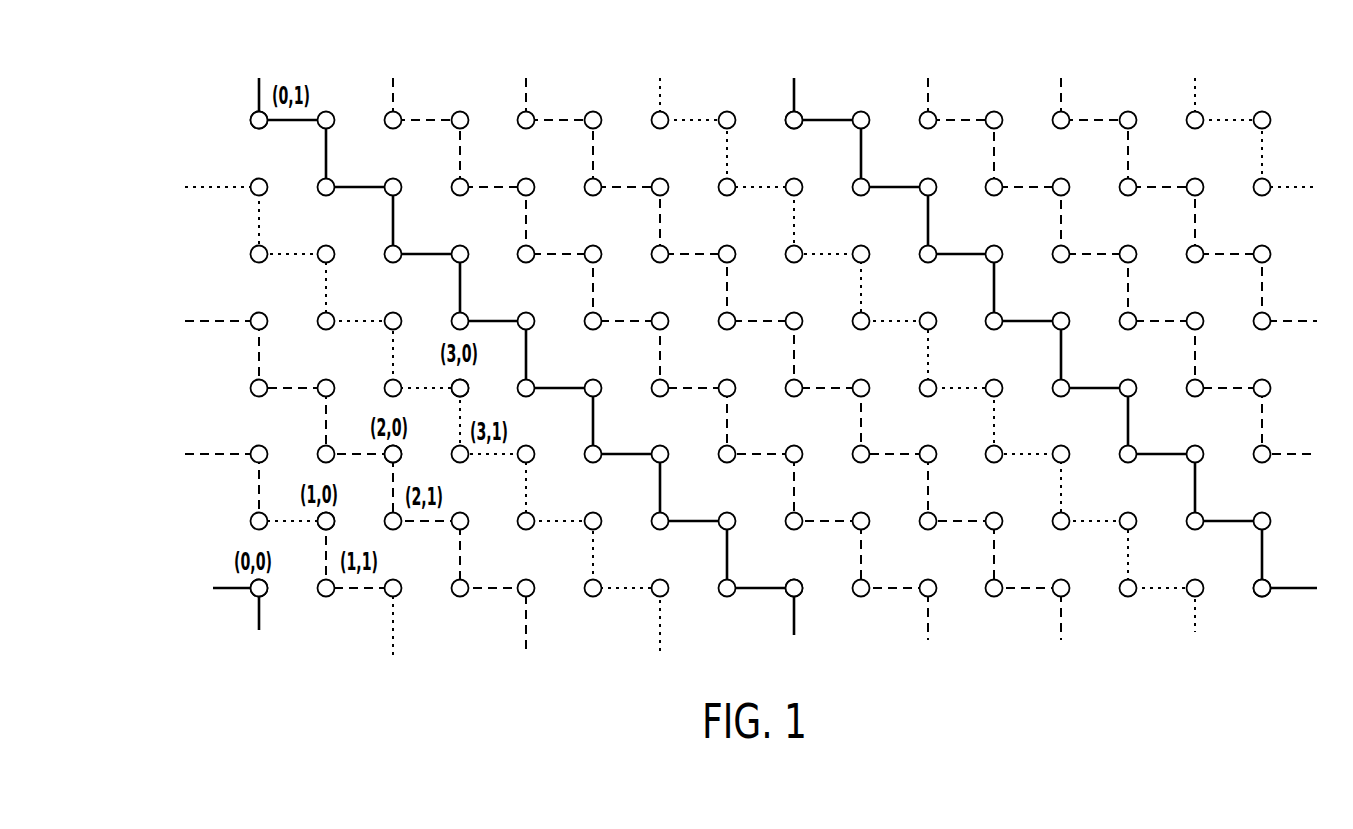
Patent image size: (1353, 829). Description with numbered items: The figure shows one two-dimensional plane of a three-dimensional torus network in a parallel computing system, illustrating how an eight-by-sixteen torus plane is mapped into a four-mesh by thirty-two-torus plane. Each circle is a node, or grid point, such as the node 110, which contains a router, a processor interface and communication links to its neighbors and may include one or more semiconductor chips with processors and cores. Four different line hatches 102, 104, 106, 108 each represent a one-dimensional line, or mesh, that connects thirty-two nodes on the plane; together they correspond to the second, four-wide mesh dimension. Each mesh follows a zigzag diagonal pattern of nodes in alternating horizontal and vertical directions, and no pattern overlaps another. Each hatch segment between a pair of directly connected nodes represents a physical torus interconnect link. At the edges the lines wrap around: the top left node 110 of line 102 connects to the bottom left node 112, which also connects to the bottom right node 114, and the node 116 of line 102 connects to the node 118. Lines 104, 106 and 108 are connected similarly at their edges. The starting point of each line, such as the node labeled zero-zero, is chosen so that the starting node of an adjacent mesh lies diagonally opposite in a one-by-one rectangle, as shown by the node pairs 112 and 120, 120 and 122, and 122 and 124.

The line hatch 102 is at (258, 111).
The line hatch 104 is at (392, 100).
The line hatch 106 is at (525, 100).
The line hatch 108 is at (659, 100).
The top left node 110 is at (251, 119).
The bottom left node 112 is at (253, 592).
The bottom right node 114 is at (1263, 597).
The node 116 is at (798, 594).
The node 118 is at (799, 116).
The node 120 is at (318, 520).
The node 122 is at (383, 454).
The node 124 is at (451, 387).